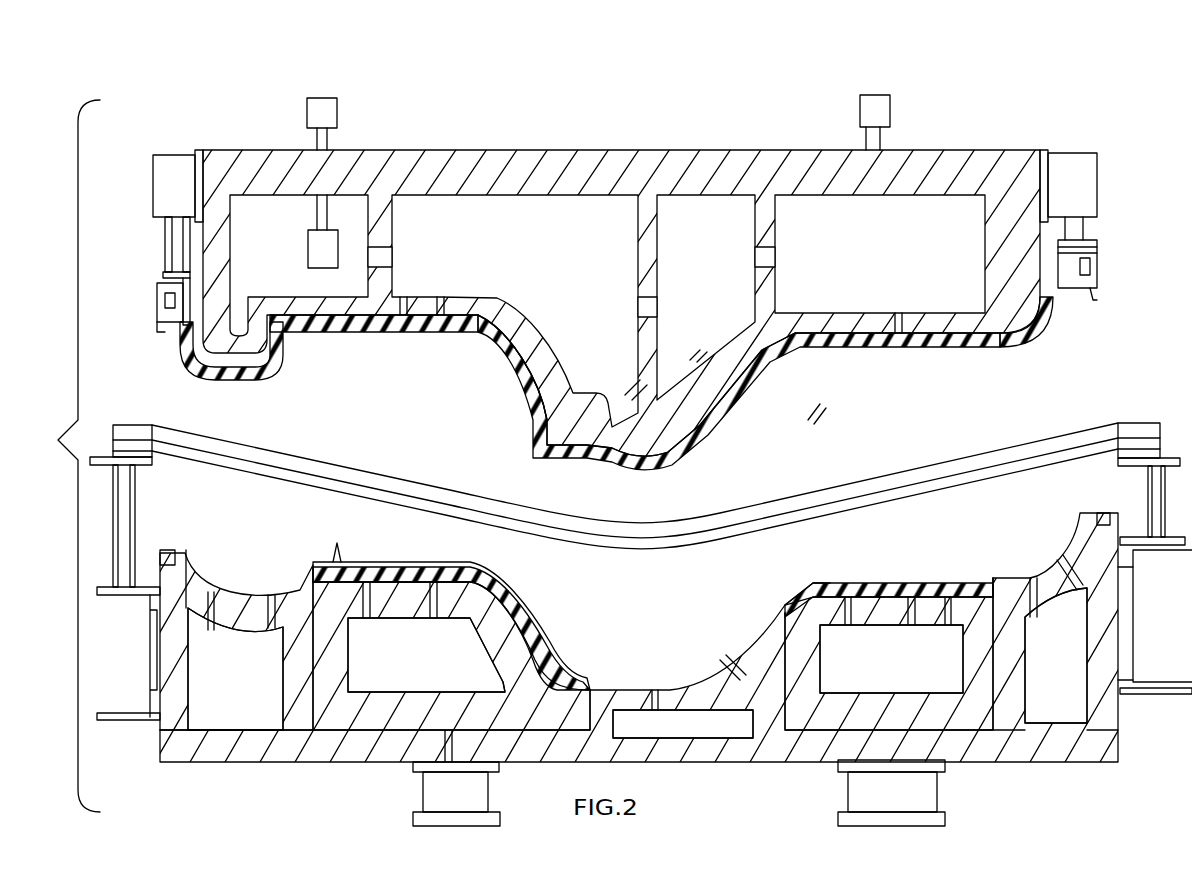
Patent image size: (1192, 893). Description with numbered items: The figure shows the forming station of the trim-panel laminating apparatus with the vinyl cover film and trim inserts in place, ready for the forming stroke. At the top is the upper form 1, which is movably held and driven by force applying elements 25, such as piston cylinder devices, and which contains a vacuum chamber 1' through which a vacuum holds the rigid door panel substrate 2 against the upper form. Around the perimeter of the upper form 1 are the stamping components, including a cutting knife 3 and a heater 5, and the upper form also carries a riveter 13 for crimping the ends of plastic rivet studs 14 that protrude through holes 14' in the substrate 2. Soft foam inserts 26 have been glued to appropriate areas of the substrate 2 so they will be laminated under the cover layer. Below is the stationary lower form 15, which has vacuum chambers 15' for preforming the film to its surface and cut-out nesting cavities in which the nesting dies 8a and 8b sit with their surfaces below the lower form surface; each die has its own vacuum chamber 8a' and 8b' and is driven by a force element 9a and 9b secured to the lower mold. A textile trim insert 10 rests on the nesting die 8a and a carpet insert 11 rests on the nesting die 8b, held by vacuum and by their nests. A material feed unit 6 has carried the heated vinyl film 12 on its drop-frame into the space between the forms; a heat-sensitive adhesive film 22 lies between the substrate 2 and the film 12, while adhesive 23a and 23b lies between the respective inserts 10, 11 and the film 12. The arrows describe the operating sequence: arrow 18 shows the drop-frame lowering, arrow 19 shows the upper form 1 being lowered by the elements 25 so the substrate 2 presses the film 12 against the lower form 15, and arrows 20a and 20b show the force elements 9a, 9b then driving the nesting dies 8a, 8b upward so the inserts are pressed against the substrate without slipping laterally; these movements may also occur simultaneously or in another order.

The upper form 1 is at (596, 312).
The vacuum chamber 1' is at (513, 363).
The door panel substrate 2 is at (735, 395).
The cutting knife 3 is at (1093, 292).
The heater 5 is at (1087, 270).
The material feed unit 6 is at (148, 432).
The nesting die 8a is at (451, 689).
The vacuum chamber 8a' is at (426, 707).
The nesting die 8b is at (877, 687).
The vacuum chamber 8b' is at (884, 711).
The force element 9a is at (473, 790).
The force element 9b is at (938, 785).
The textile trim insert 10 is at (387, 565).
The carpet insert 11 is at (812, 590).
The vinyl film 12 is at (352, 488).
The riveter 13 is at (318, 248).
The plastic rivet studs 14 is at (355, 545).
The holes 14' is at (374, 348).
The lower form 15 is at (236, 763).
The vacuum chambers 15' is at (638, 692).
The arrow 18 is at (152, 480).
The arrow 19 is at (287, 382).
The arrow 20a is at (567, 660).
The arrow 20b is at (970, 587).
The heat-sensitive adhesive film 22 is at (240, 438).
The adhesive 23a is at (432, 566).
The adhesive 23b is at (828, 583).
The force applying elements 25 is at (335, 113).
The soft foam inserts 26 is at (238, 381).